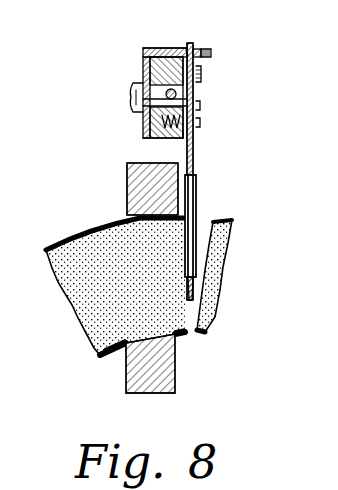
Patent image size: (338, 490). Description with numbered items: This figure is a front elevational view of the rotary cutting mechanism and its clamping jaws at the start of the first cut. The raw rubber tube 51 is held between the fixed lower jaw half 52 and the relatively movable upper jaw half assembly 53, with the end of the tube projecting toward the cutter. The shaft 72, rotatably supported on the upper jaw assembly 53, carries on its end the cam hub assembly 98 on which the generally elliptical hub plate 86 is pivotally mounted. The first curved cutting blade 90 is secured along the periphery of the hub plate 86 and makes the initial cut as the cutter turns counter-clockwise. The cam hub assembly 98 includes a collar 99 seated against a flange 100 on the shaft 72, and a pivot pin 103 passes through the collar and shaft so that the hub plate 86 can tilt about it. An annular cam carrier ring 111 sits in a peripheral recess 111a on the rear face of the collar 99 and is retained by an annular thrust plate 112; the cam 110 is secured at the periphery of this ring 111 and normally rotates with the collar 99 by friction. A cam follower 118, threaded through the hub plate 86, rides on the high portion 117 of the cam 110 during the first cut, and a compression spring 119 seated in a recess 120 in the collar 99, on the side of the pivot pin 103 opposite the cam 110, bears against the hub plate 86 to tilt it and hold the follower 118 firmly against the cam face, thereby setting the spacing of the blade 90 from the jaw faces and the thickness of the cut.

The raw rubber tube 51 is at (88, 290).
The fixed lower jaw half 52 is at (145, 372).
The upper jaw half assembly 53 is at (140, 183).
The shaft 72 is at (133, 95).
The hub plate 86 is at (200, 106).
The first curved cutting blade 90 is at (197, 205).
The cam hub assembly 98 is at (172, 50).
The collar 99 is at (199, 73).
The flange 100 is at (160, 72).
The pivot pin 103 is at (178, 96).
The cam 110 is at (186, 50).
The annular cam carrier ring 111 is at (148, 66).
The peripheral recess 111a is at (164, 55).
The annular thrust plate 112 is at (158, 128).
The high portion 117 is at (197, 52).
The cam follower 118 is at (210, 54).
The compression spring 119 is at (200, 127).
The recess 120 is at (174, 134).